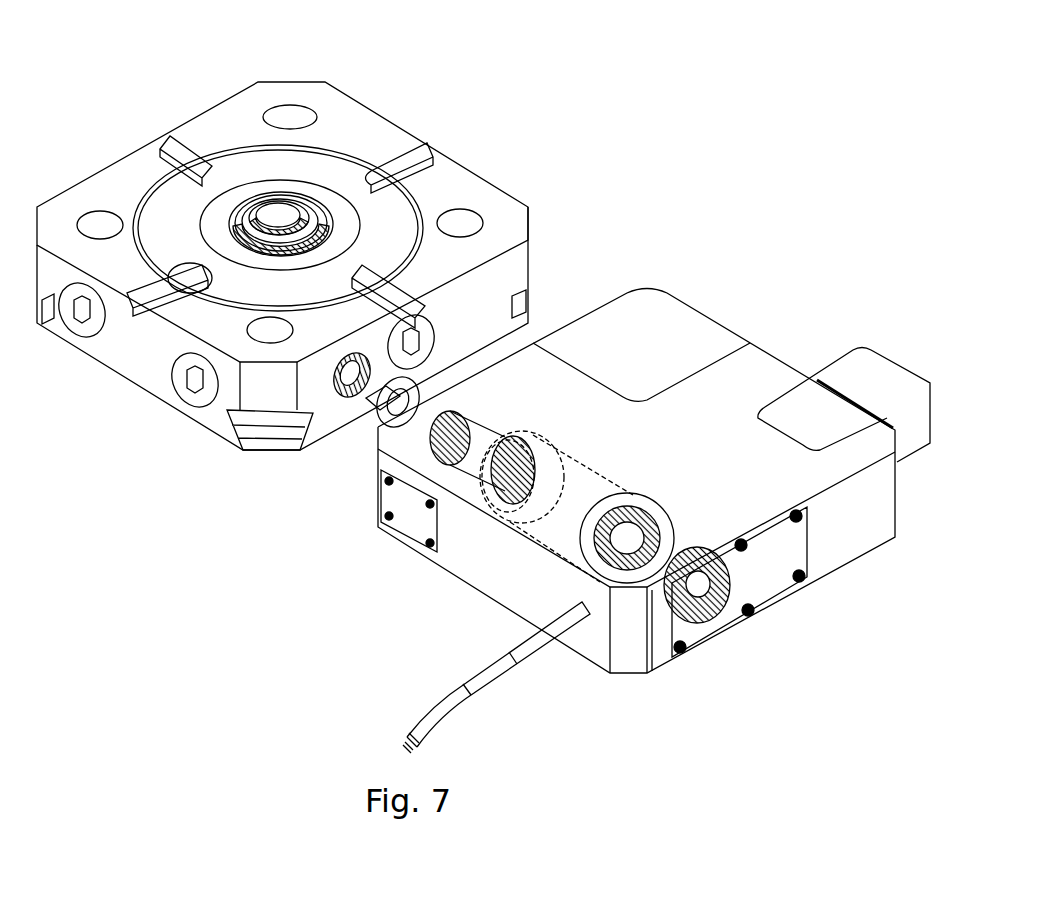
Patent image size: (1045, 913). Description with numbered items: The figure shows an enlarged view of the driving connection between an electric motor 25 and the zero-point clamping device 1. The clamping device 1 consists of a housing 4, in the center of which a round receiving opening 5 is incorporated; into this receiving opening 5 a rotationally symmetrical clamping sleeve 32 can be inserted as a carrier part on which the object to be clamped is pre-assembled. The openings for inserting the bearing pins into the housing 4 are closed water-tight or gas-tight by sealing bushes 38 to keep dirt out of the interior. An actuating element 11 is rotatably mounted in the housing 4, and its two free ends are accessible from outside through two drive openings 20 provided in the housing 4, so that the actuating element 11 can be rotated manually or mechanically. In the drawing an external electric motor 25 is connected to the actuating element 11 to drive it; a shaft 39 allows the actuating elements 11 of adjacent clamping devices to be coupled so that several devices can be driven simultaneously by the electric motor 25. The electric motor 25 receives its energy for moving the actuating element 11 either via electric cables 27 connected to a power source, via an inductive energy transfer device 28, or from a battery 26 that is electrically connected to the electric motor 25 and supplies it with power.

The zero-point clamping device 1 is at (447, 188).
The housing 4 is at (123, 187).
The receiving opening 5 is at (230, 212).
The clamping sleeve 32 is at (296, 205).
The sealing bush 38 is at (190, 400).
The drive openings 20 is at (338, 390).
The actuating element 11 is at (368, 409).
The shaft 39 is at (378, 428).
The battery 26 is at (640, 337).
The inductive energy transfer device 28 is at (873, 383).
The electric motor 25 is at (560, 515).
The electric cables 27 is at (548, 645).